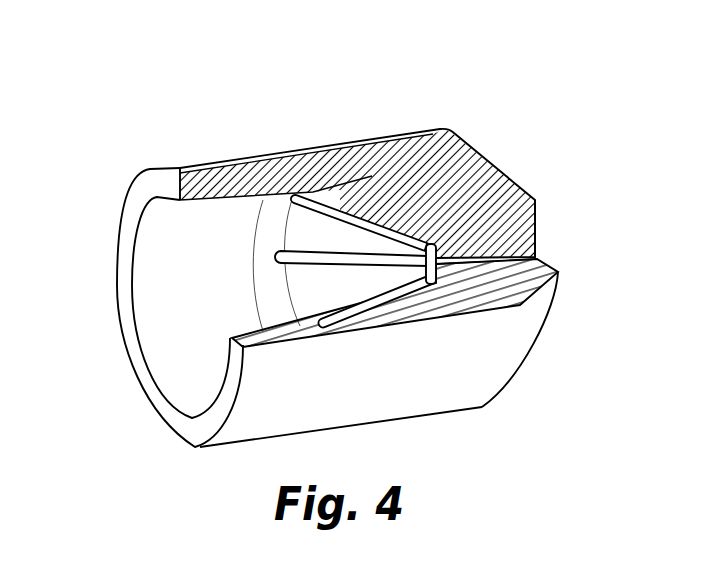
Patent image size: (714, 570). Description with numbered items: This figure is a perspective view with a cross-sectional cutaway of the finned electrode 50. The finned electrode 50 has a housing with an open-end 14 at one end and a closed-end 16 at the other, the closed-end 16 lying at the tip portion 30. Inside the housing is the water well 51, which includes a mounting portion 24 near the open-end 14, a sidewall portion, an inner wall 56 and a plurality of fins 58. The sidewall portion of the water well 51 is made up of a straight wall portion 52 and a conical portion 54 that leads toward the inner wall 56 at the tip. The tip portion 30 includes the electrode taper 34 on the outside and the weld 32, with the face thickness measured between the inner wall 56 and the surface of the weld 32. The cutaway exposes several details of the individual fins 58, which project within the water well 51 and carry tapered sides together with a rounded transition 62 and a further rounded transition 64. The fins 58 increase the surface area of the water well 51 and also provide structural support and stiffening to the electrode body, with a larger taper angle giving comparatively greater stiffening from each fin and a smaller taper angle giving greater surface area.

The open-end 14 is at (150, 387).
The closed-end 16 is at (556, 263).
The mounting portion 24 is at (217, 314).
The tip portion 30 is at (492, 178).
The weld 32 is at (537, 228).
The electrode taper 34 is at (540, 307).
The finned electrode 50 is at (172, 122).
The water well 51 is at (155, 305).
The straight wall portion 52 is at (272, 223).
The conical portion 54 is at (315, 228).
The inner wall 56 is at (444, 305).
The fins 58 is at (367, 262).
The rounded transition 62 is at (430, 247).
The rounded transition 64 is at (282, 257).